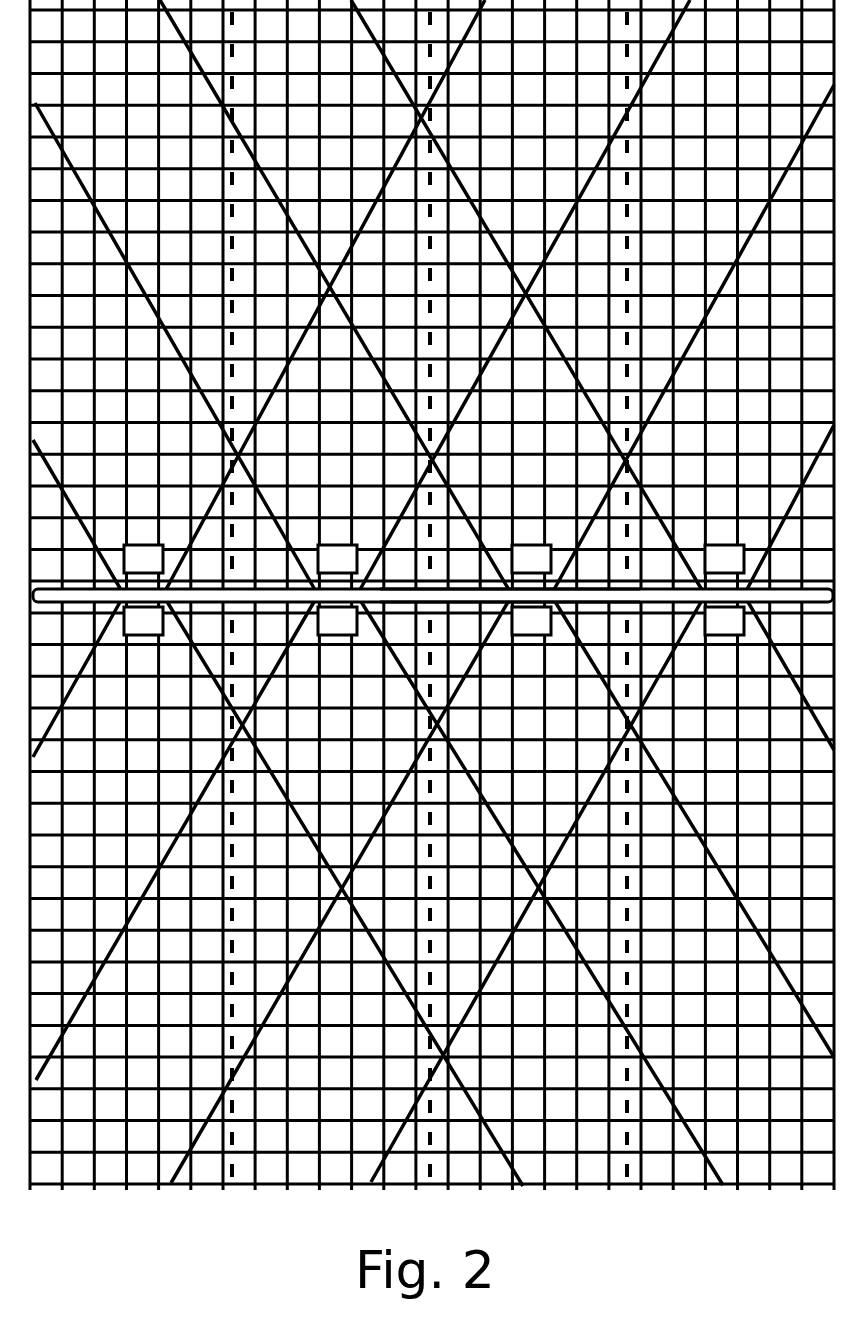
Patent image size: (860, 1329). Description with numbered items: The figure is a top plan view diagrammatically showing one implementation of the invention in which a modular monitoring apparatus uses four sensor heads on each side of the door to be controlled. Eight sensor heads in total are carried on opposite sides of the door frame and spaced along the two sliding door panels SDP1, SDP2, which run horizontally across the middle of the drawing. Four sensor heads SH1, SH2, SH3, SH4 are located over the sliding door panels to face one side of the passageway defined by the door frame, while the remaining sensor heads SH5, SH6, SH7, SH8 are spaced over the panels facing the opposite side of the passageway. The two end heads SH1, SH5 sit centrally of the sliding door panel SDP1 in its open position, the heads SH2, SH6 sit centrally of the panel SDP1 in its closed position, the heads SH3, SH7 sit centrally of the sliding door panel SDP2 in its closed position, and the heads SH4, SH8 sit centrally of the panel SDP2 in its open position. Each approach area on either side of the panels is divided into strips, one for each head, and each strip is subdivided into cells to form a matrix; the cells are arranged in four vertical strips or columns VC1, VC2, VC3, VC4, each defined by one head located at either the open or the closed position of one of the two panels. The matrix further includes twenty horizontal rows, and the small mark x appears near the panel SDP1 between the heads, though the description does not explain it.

The sensor head SH1 is at (143, 635).
The sensor head SH2 is at (338, 635).
The sensor head SH3 is at (533, 635).
The sensor head SH4 is at (725, 635).
The sensor head SH5 is at (147, 545).
The sensor head SH6 is at (341, 545).
The sensor head SH7 is at (535, 545).
The sensor head SH8 is at (727, 545).
The sliding door panel SDP1 is at (270, 593).
The sliding door panel SDP2 is at (616, 672).
The vertical strip or column VC1 is at (278, 593).
The vertical strip or column VC2 is at (379, 592).
The vertical strip or column VC3 is at (497, 591).
The vertical strip or column VC4 is at (592, 591).
The distance marker x is at (244, 719).